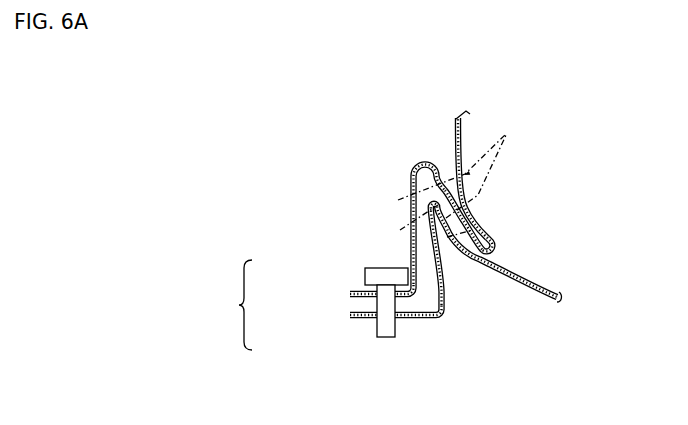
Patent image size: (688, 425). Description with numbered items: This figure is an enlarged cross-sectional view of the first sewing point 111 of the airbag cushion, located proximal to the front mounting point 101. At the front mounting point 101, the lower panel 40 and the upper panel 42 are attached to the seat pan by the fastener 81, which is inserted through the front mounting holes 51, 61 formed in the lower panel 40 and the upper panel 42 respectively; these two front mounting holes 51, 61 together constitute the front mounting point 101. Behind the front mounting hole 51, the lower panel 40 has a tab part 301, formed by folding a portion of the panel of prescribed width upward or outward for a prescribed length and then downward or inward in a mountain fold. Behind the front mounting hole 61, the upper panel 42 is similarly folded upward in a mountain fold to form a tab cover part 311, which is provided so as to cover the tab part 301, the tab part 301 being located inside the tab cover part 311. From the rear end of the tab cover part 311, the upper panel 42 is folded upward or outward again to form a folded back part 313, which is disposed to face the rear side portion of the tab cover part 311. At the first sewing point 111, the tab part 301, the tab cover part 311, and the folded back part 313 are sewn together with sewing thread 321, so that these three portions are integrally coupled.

The first sewing point 111 is at (461, 173).
The upper panel 42 is at (452, 124).
The sewing thread 321 is at (477, 175).
The tab cover part 311 is at (407, 179).
The folded back part 313 is at (482, 218).
The tab part 301 is at (496, 244).
The front mounting hole 61 is at (350, 291).
The front mounting hole 51 is at (352, 319).
The front mounting point 101 is at (319, 307).
The fastener 81 is at (392, 326).
The lower panel 40 is at (540, 304).